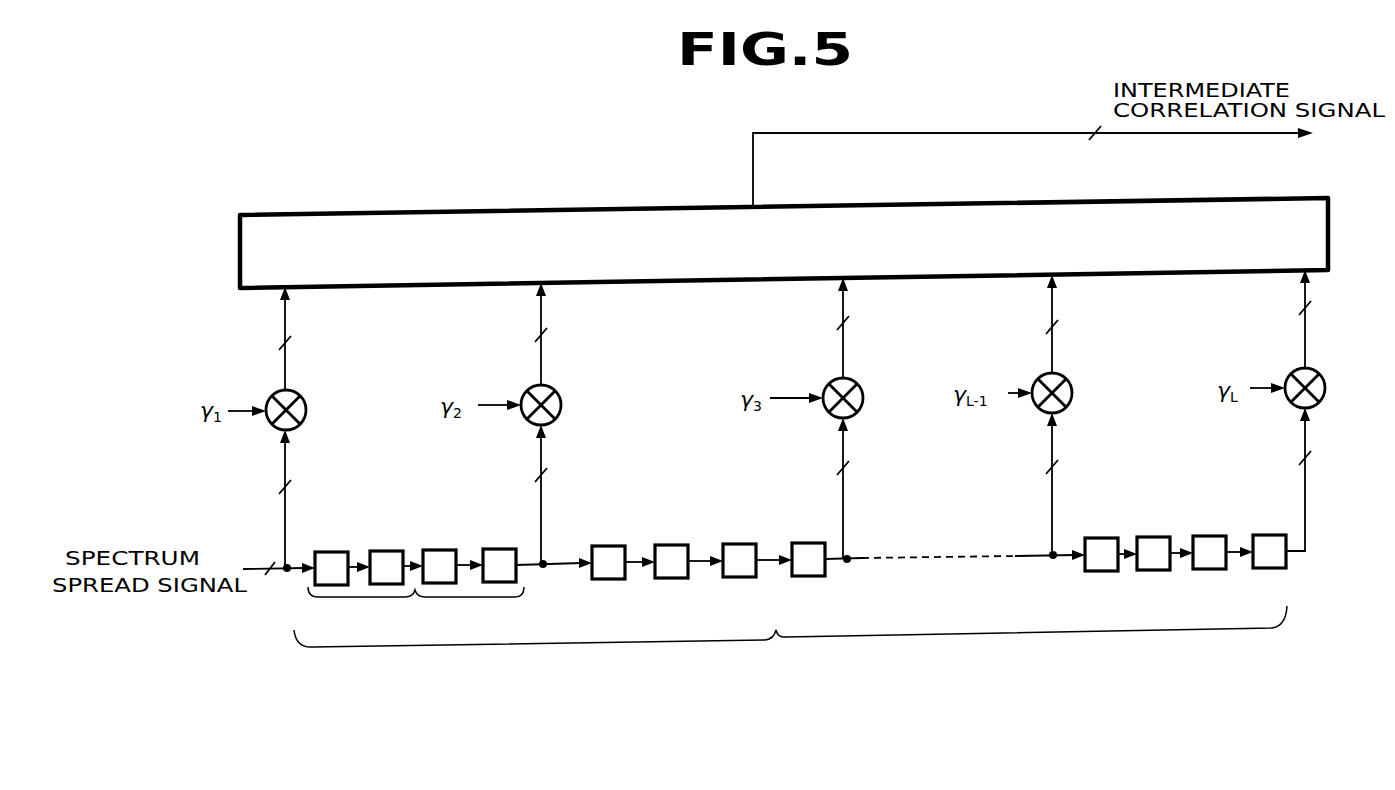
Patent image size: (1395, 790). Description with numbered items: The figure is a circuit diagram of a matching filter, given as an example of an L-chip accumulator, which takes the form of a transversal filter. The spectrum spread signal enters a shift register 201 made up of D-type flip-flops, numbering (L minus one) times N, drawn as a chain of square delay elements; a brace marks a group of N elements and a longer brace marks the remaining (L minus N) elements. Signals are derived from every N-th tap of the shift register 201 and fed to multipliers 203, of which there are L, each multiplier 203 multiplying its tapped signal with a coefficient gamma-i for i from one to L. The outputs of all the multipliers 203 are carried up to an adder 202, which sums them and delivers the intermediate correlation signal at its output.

The shift register 201 is at (400, 551).
The adder 202 is at (523, 211).
The multipliers 203 is at (306, 400).